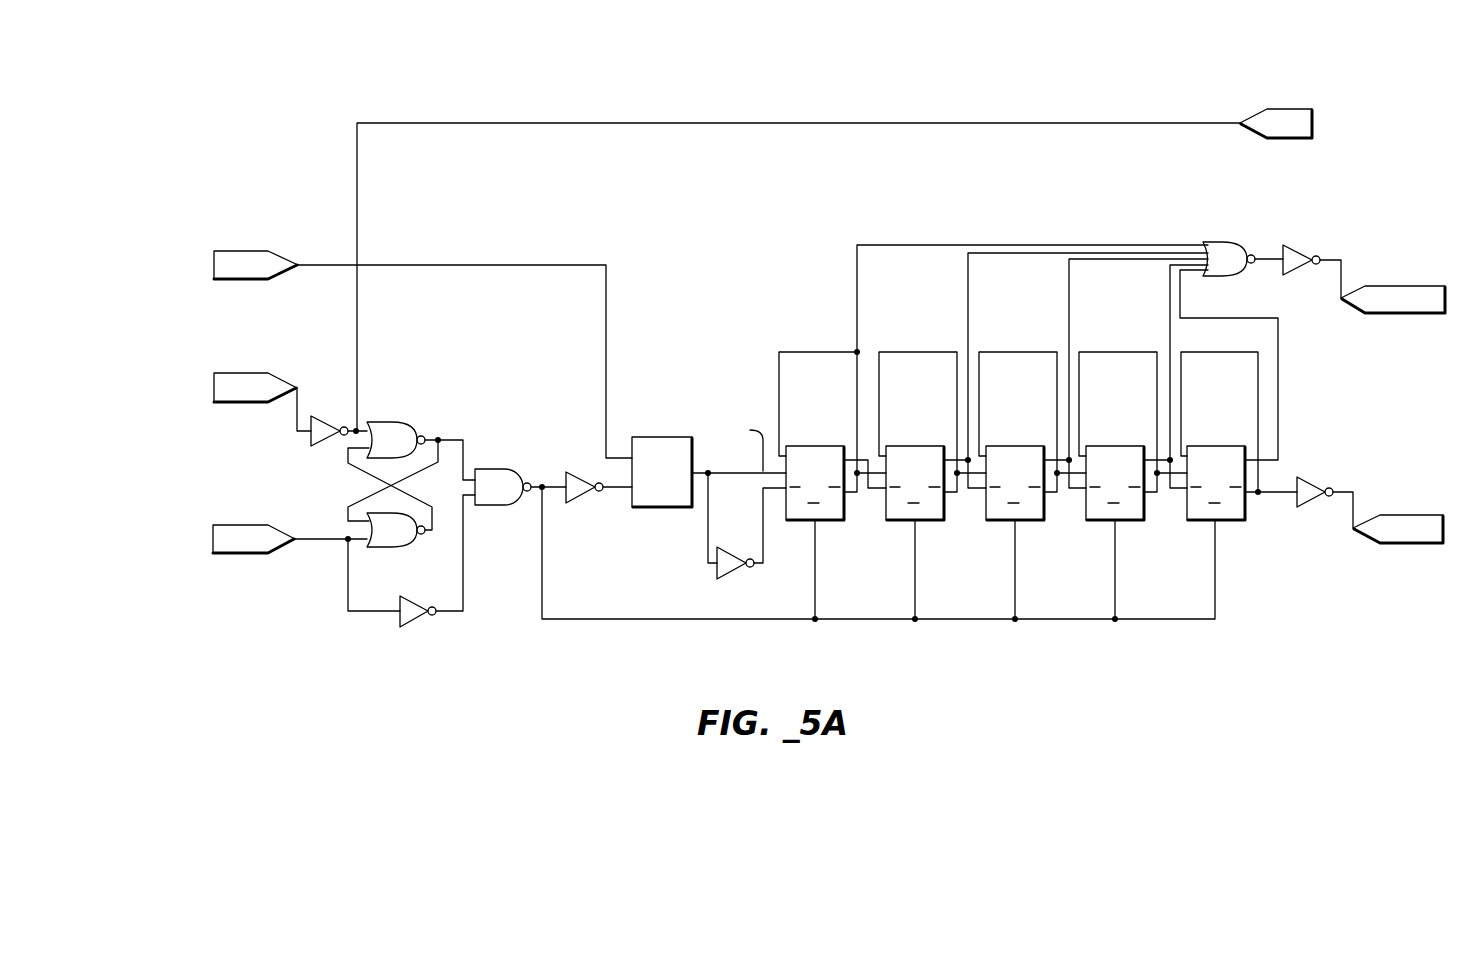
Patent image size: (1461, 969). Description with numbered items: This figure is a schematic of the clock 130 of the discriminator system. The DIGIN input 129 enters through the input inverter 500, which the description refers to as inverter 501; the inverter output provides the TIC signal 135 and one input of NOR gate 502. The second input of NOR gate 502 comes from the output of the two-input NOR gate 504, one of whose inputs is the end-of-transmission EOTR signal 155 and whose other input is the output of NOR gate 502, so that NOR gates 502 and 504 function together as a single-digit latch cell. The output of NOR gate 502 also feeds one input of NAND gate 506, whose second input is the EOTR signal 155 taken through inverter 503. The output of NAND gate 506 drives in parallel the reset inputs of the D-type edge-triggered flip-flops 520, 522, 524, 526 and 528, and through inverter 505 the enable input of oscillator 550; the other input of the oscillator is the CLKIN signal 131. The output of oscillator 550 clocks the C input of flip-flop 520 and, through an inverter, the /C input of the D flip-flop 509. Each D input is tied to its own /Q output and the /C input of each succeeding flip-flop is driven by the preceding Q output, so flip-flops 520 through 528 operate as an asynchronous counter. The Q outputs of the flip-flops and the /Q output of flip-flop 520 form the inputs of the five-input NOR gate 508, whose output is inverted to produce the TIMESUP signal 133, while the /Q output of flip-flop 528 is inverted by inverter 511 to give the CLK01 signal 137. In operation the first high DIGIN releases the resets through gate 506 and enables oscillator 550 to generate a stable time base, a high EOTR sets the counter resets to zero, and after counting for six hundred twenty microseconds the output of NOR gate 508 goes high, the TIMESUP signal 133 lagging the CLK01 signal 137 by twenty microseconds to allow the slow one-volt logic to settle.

The clock 130 is at (410, 92).
The CLKIN signal 131 is at (335, 263).
The DIGIN digital input 129 is at (308, 354).
The EOTR signal 155 is at (332, 541).
The TIC signal 135 is at (1187, 122).
The TIMESUP signal 133 is at (1342, 282).
The CLK01 signal 137 is at (1355, 512).
The inverter 500 is at (323, 447).
The inverter 501 is at (385, 548).
The NOR gate 502 is at (397, 422).
The inverter 503 is at (410, 627).
The NOR gate 504 is at (728, 578).
The inverter 505 is at (578, 503).
The NAND gate 506 is at (503, 468).
The five-input NOR gate 508 is at (1225, 242).
The D flip-flop 509 is at (1298, 245).
The inverter 511 is at (1313, 477).
The D-type edge triggered flip-flop 520 is at (803, 446).
The D-type edge triggered flip-flop 522 is at (903, 446).
The D-type edge triggered flip-flop 524 is at (1003, 446).
The D-type edge triggered flip-flop 526 is at (1103, 446).
The D-type edge triggered flip-flop 528 is at (1204, 446).
The oscillator 550 is at (658, 437).